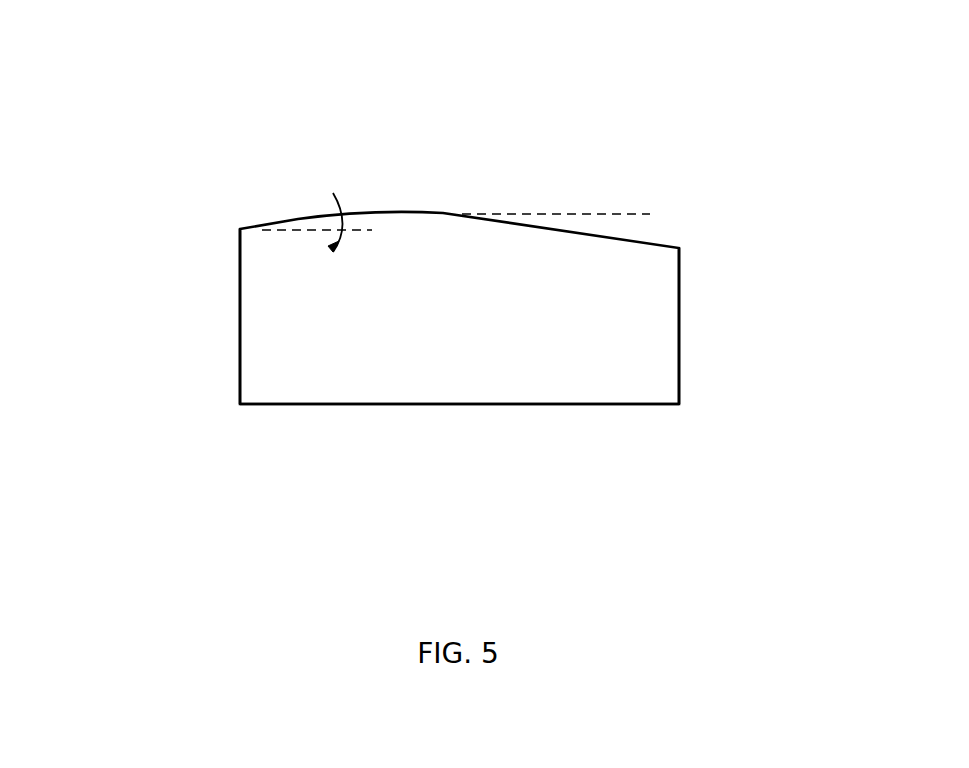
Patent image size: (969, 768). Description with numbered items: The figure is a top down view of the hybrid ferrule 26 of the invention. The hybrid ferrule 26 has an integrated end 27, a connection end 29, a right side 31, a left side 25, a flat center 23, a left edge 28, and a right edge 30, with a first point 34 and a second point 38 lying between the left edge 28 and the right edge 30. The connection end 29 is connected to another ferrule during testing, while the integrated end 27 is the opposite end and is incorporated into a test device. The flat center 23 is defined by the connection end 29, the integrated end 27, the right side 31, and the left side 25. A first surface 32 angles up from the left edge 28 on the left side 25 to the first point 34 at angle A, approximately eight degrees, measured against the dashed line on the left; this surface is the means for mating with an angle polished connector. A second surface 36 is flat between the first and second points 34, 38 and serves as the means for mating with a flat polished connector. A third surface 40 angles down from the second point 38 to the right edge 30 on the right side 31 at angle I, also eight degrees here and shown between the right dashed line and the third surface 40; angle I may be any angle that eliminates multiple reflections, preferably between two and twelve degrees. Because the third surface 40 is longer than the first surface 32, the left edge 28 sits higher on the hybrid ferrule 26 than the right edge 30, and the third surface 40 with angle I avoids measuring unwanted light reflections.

The flat center 23 is at (545, 355).
The left side 25 is at (240, 317).
The hybrid ferrule 26 is at (367, 367).
The integrated end 27 is at (467, 405).
The left edge 28 is at (240, 229).
The connection end 29 is at (682, 183).
The right edge 30 is at (680, 248).
The right side 31 is at (683, 335).
The first surface 32 is at (298, 219).
The first point 34 is at (350, 214).
The second surface 36 is at (400, 215).
The second point 38 is at (443, 213).
The third surface 40 is at (577, 232).
The angle I is at (498, 220).